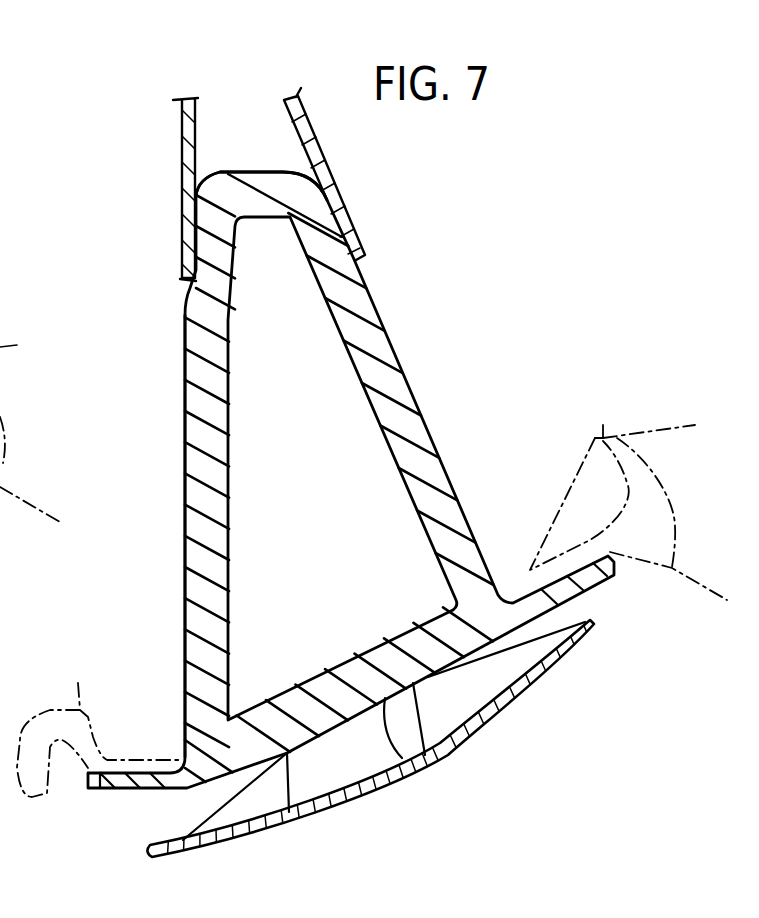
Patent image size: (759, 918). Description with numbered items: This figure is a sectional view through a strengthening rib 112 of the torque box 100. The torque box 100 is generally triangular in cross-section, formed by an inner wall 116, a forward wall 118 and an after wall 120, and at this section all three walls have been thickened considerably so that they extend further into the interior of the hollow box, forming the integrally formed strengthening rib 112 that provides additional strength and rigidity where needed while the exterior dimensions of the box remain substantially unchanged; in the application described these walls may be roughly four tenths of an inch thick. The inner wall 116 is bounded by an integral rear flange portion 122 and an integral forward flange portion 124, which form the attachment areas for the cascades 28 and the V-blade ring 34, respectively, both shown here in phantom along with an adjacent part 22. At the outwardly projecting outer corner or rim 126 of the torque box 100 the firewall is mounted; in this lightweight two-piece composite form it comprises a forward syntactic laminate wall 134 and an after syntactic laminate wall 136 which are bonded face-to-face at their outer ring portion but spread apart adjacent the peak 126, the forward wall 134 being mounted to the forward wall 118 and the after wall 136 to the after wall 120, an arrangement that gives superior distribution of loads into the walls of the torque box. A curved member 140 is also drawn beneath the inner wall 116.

The torque box 100 is at (402, 272).
The strengthening rib 112 is at (187, 352).
The forward wall 118 is at (197, 395).
The after wall 120 is at (400, 385).
The inner wall 116 is at (407, 763).
The rear flange portion 122 is at (603, 577).
The forward flange portion 124 is at (100, 793).
The outer corner or rim 126 is at (241, 172).
The forward syntactic GR/EP laminate wall 134 is at (183, 167).
The after syntactic GR/EP laminate wall 136 is at (350, 213).
The curved rib 140 is at (487, 722).
The cascades 28 is at (603, 425).
The V-blade ring 34 is at (78, 683).
The panel (phantom) 22 is at (30, 457).